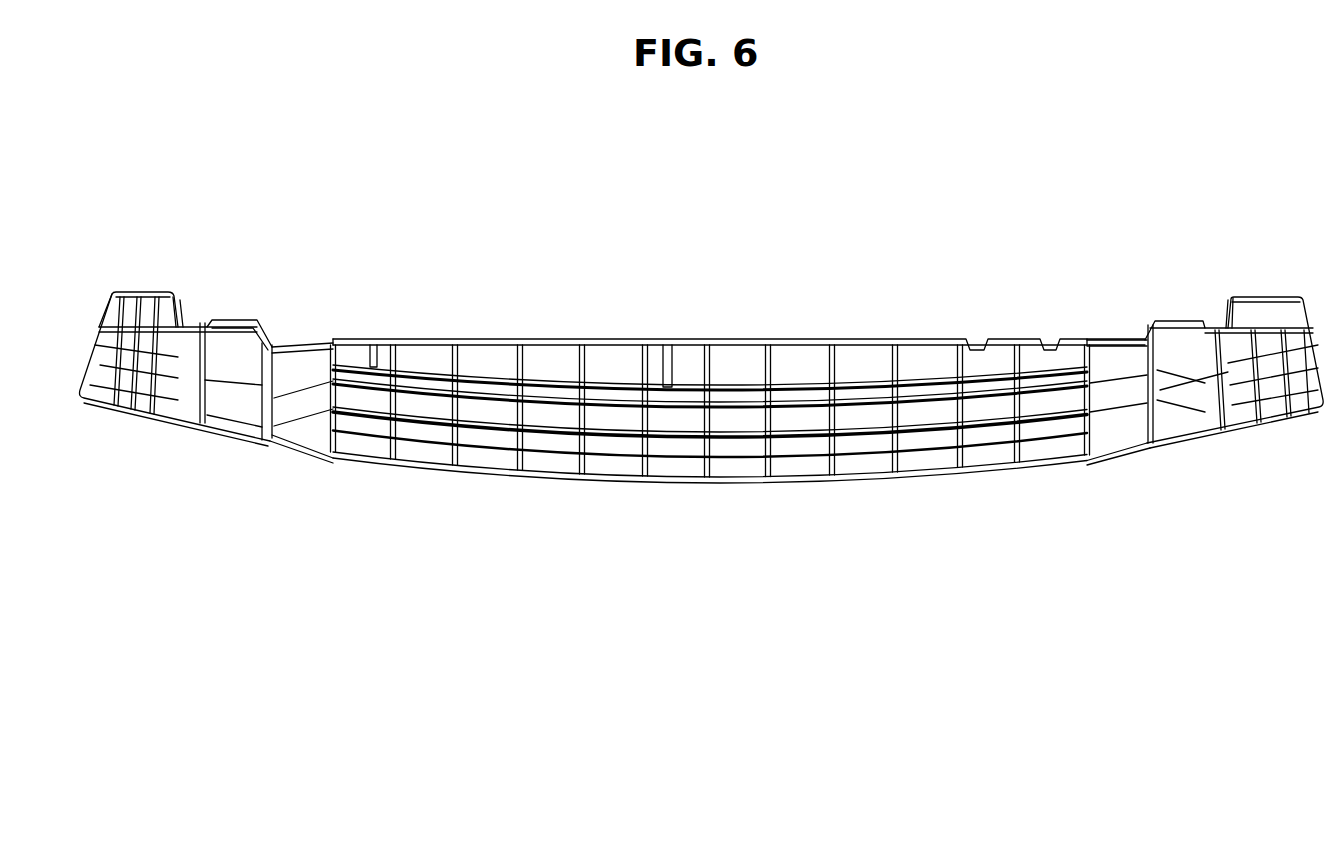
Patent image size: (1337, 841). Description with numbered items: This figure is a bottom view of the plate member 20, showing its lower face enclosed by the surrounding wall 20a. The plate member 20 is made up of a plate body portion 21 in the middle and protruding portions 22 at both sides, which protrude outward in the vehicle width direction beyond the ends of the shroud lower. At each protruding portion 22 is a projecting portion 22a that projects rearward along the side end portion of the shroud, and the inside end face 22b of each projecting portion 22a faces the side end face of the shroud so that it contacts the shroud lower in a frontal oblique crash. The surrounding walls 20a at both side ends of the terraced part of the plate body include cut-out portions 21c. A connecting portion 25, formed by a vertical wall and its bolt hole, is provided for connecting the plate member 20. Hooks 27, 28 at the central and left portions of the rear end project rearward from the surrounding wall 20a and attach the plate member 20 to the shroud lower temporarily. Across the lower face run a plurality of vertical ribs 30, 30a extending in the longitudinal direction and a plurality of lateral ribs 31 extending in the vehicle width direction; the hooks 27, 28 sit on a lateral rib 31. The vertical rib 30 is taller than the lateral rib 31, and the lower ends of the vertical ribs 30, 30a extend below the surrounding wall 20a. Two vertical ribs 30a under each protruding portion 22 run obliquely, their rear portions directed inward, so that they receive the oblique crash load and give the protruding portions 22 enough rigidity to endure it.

The plate member 20 is at (800, 245).
The surrounding wall 20a is at (677, 490).
The plate body portion 21 is at (800, 470).
The cut-out portion 21c is at (298, 452).
The protruding portion 22 is at (147, 395).
The projecting portion 22a is at (142, 302).
The inside end face 22b is at (184, 320).
The connecting portion 25 is at (248, 310).
The hook 27 is at (668, 335).
The hook 28 is at (371, 334).
The vertical rib 30 is at (527, 357).
The vertical rib 30a is at (201, 340).
The lateral rib 31 is at (860, 378).